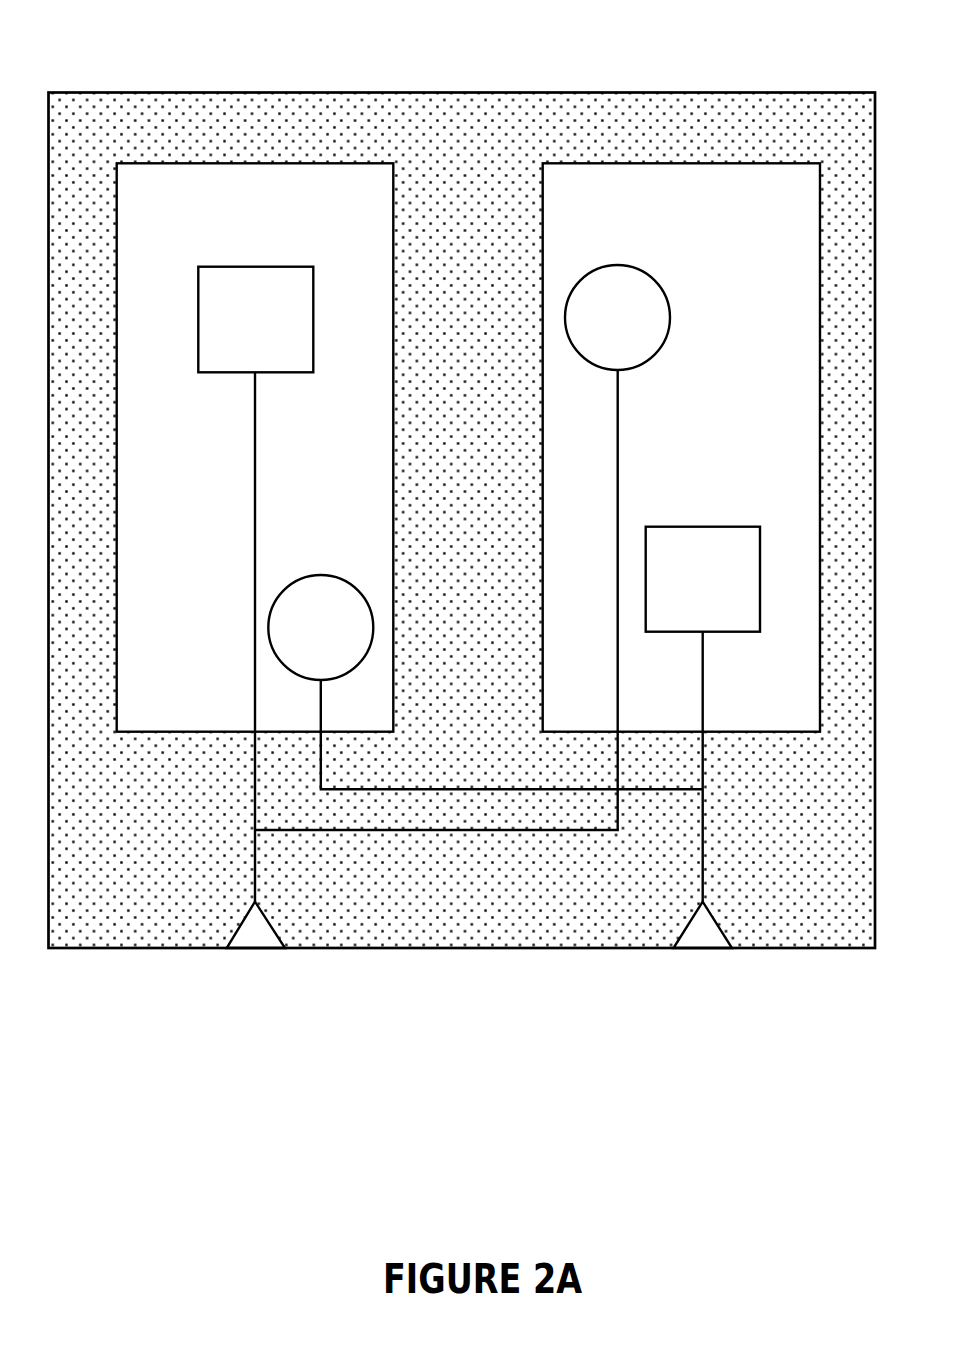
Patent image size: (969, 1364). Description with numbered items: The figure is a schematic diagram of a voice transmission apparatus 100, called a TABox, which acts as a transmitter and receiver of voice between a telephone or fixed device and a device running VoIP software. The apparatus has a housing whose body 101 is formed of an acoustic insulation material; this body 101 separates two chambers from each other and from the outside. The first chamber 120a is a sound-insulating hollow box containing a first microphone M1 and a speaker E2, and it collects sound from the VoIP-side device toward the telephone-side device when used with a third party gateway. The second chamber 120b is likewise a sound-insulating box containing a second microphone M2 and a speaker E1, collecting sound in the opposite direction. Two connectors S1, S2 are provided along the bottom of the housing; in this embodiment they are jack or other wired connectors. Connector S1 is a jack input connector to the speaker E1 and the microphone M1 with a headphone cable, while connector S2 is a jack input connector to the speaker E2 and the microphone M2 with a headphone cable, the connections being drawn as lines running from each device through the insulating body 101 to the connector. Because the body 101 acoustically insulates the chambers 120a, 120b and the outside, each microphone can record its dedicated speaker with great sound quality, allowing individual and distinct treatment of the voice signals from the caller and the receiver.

The voice transmission apparatus 100 is at (492, 950).
The body 101 is at (486, 140).
The first chamber 120a is at (255, 371).
The second chamber 120b is at (681, 371).
The connector S1 is at (422, 682).
The connector S2 is at (526, 813).
The first microphone M1 is at (255, 320).
The second microphone M2 is at (703, 579).
The speaker E1 is at (617, 317).
The speaker E2 is at (320, 627).